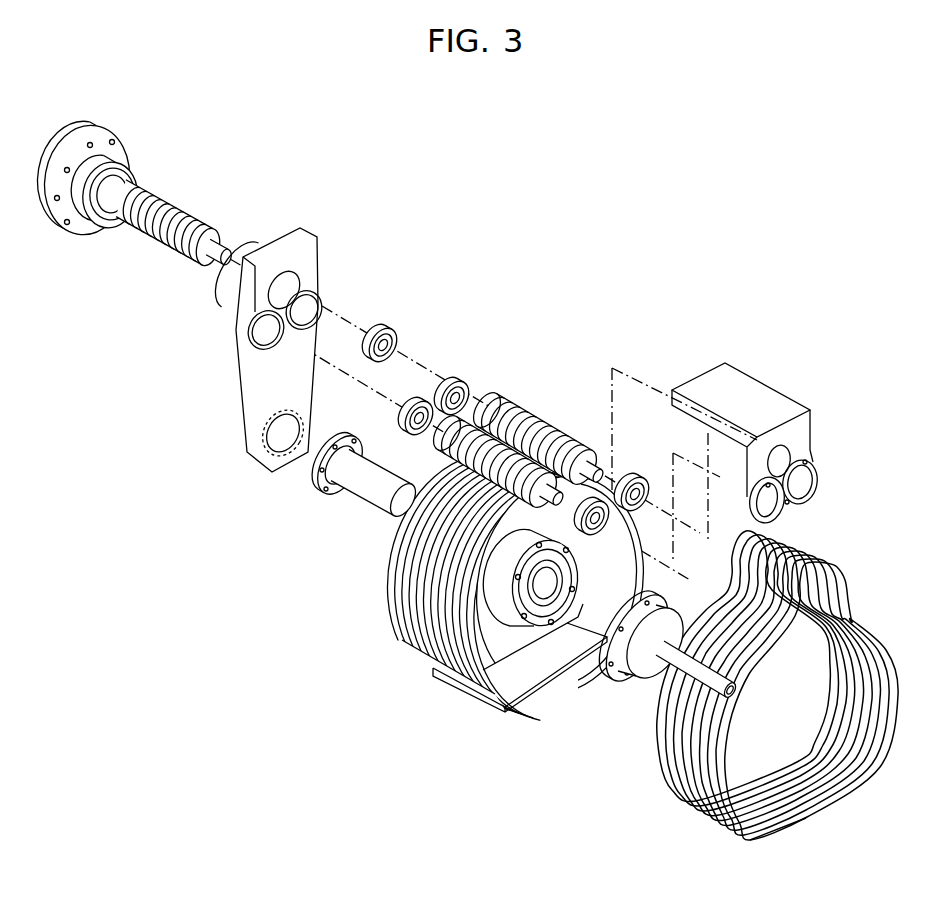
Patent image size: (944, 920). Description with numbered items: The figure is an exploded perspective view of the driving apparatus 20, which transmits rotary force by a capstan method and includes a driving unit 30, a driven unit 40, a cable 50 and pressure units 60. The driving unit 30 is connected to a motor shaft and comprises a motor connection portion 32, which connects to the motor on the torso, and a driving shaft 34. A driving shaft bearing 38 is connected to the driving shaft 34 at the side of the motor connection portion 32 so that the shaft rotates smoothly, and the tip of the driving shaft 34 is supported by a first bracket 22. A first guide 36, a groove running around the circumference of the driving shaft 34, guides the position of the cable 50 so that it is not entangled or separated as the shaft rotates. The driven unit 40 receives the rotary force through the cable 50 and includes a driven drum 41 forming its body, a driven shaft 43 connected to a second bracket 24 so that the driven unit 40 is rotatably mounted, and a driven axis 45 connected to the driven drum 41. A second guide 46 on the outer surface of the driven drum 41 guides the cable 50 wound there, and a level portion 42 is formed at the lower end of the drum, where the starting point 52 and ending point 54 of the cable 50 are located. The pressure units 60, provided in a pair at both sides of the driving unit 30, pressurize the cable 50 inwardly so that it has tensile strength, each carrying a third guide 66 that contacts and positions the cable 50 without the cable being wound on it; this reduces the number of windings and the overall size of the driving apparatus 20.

The driving apparatus 20 is at (597, 214).
The first bracket 22 is at (741, 386).
The second bracket 24 is at (300, 232).
The driving unit 30 is at (177, 113).
The motor connection portion 32 is at (120, 146).
The driving shaft 34 is at (178, 197).
The first guide 36 is at (200, 216).
The driving shaft bearing 38 is at (384, 325).
The driven unit 40 is at (485, 591).
The driven drum 41 is at (495, 587).
The level portion 42 is at (528, 690).
The driven shaft 43 is at (367, 495).
The driven axis 45 is at (653, 683).
The second guide 46 is at (406, 637).
The cable 50 is at (759, 718).
The starting point 52 is at (760, 795).
The ending point 54 is at (803, 818).
The pressure units 60 is at (516, 430).
The third guide 66 is at (527, 405).